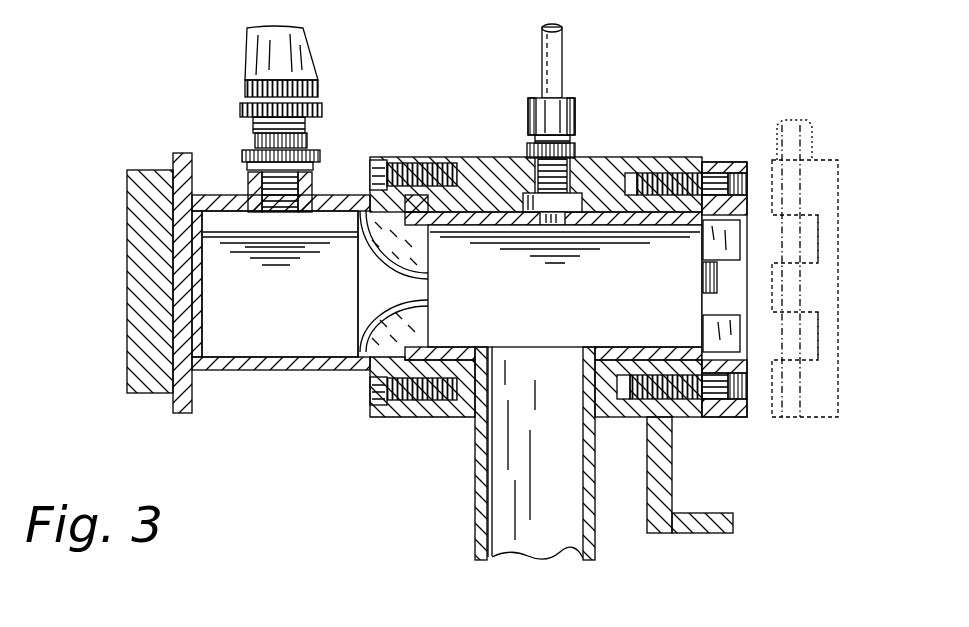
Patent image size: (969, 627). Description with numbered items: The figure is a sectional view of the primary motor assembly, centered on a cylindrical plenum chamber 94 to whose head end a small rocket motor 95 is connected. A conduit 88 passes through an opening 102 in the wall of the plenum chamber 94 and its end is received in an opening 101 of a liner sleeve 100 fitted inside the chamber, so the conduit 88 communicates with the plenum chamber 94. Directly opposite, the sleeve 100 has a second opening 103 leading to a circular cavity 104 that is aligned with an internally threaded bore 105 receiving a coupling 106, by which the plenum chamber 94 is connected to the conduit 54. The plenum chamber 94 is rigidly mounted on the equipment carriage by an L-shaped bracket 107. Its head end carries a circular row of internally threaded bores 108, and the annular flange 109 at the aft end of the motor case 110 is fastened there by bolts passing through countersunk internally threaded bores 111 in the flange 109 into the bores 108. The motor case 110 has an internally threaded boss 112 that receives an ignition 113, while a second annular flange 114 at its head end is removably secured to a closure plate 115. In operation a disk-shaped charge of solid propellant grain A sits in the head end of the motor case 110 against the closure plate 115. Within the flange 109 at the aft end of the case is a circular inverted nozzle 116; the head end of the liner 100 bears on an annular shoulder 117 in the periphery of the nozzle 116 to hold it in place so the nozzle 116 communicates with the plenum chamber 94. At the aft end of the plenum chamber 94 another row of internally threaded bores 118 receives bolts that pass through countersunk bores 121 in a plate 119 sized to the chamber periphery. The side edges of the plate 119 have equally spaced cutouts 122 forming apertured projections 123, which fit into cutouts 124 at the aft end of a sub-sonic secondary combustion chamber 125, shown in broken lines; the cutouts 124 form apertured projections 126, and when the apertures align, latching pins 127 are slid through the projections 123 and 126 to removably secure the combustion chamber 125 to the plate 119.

The conduit 54 is at (563, 45).
The conduit 88 is at (475, 476).
The plenum chamber 94 is at (627, 150).
The rocket motor 95 is at (323, 191).
The liner sleeve 100 is at (565, 286).
The opening 101 is at (620, 326).
The opening 102 is at (611, 418).
The second opening 103 is at (566, 223).
The circular cavity 104 is at (526, 206).
The internally threaded bore 105 is at (567, 180).
The coupling 106 is at (576, 116).
The L-shaped bracket 107 is at (673, 476).
The internally threaded bores 108 is at (425, 163).
The annular flange 109 is at (379, 160).
The motor case 110 is at (312, 371).
The countersunk internally threaded bores 111 is at (391, 418).
The internally threaded boss 112 is at (250, 182).
The ignition 113 is at (320, 58).
The second annular flange 114 is at (193, 399).
The closure plate 115 is at (151, 394).
The inverted nozzle 116 is at (427, 312).
The annular shoulder 117 is at (426, 332).
The internally threaded bores 118 is at (666, 174).
The plate 119 is at (722, 161).
The countersunk bores 121 is at (750, 172).
The cutouts 122 is at (710, 292).
The projections 123 is at (706, 251).
The cutouts 124 is at (791, 266).
The secondary combustion chamber 125 is at (822, 158).
The projections 126 is at (784, 402).
The latching pins 127 is at (789, 118).
The solid propellant grain A is at (205, 319).